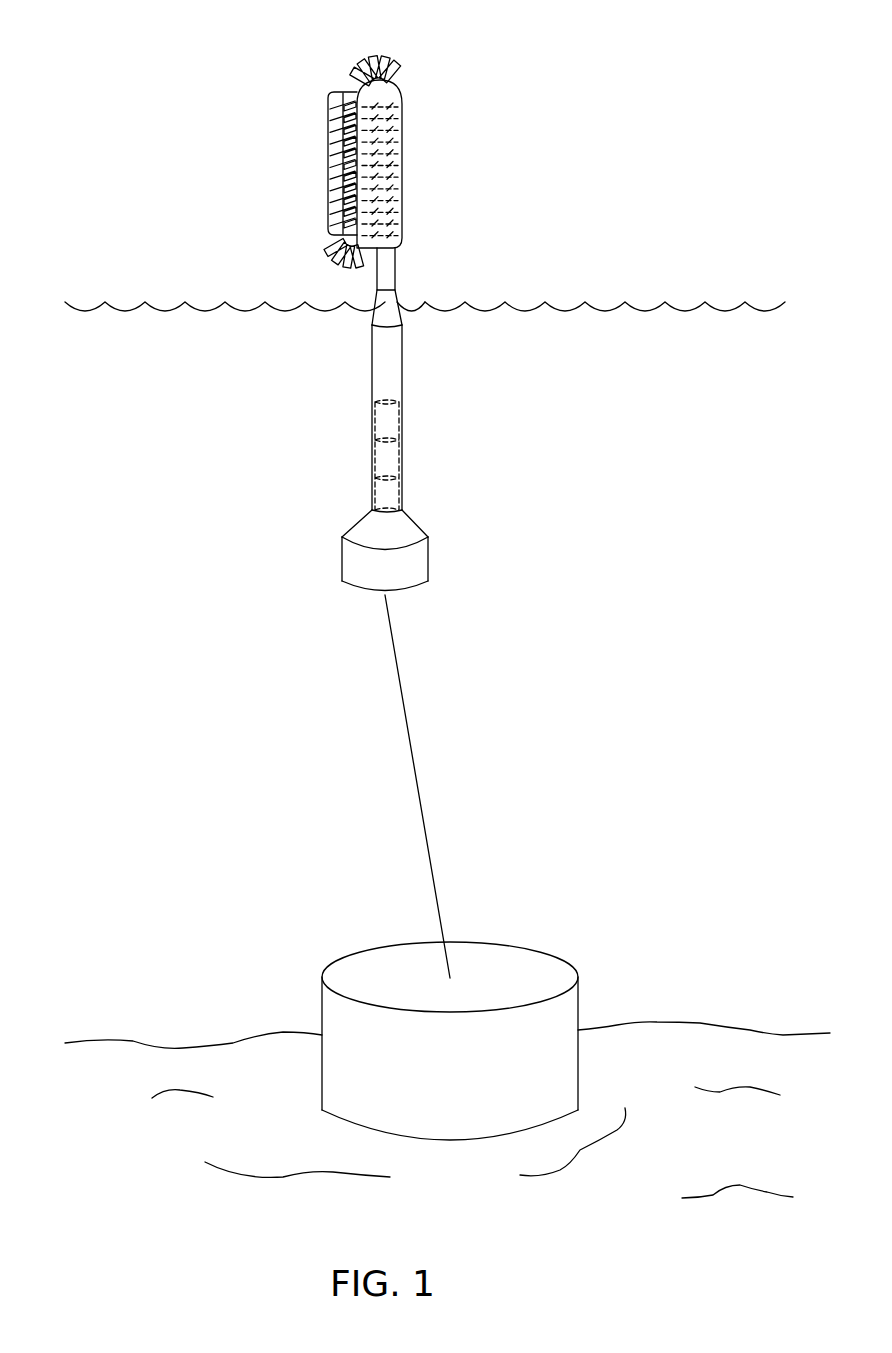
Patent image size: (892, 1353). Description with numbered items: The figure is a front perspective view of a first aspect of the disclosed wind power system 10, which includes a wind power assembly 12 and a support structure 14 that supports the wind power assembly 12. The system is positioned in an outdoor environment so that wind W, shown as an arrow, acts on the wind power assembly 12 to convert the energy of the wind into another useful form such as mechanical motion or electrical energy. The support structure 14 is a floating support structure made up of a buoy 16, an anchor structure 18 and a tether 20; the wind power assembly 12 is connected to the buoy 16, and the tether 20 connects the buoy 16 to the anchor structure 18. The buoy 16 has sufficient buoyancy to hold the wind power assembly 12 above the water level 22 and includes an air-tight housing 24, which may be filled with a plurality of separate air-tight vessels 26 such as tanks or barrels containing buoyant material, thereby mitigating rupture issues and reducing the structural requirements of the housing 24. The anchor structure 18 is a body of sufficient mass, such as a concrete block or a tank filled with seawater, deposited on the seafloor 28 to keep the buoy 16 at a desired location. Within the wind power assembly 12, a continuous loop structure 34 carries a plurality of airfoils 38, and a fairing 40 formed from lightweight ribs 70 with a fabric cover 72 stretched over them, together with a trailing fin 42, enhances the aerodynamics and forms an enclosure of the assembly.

The wind power system 10 is at (657, 163).
The wind power assembly 12 is at (336, 148).
The support structure 14 is at (454, 419).
The buoy 16 is at (402, 356).
The anchor structure 18 is at (579, 991).
The tether 20 is at (412, 752).
The water level 22 is at (603, 310).
The air-tight housing 24 is at (402, 386).
The air-tight vessels 26 is at (478, 405).
The seafloor 28 is at (702, 1037).
The continuous loop structure 34 is at (343, 88).
The airfoils 38 is at (372, 58).
The fairing 40 is at (402, 97).
The trailing fin 42 is at (328, 102).
The ribs 70 is at (405, 142).
The cover 72 is at (392, 161).
The wind W is at (513, 140).